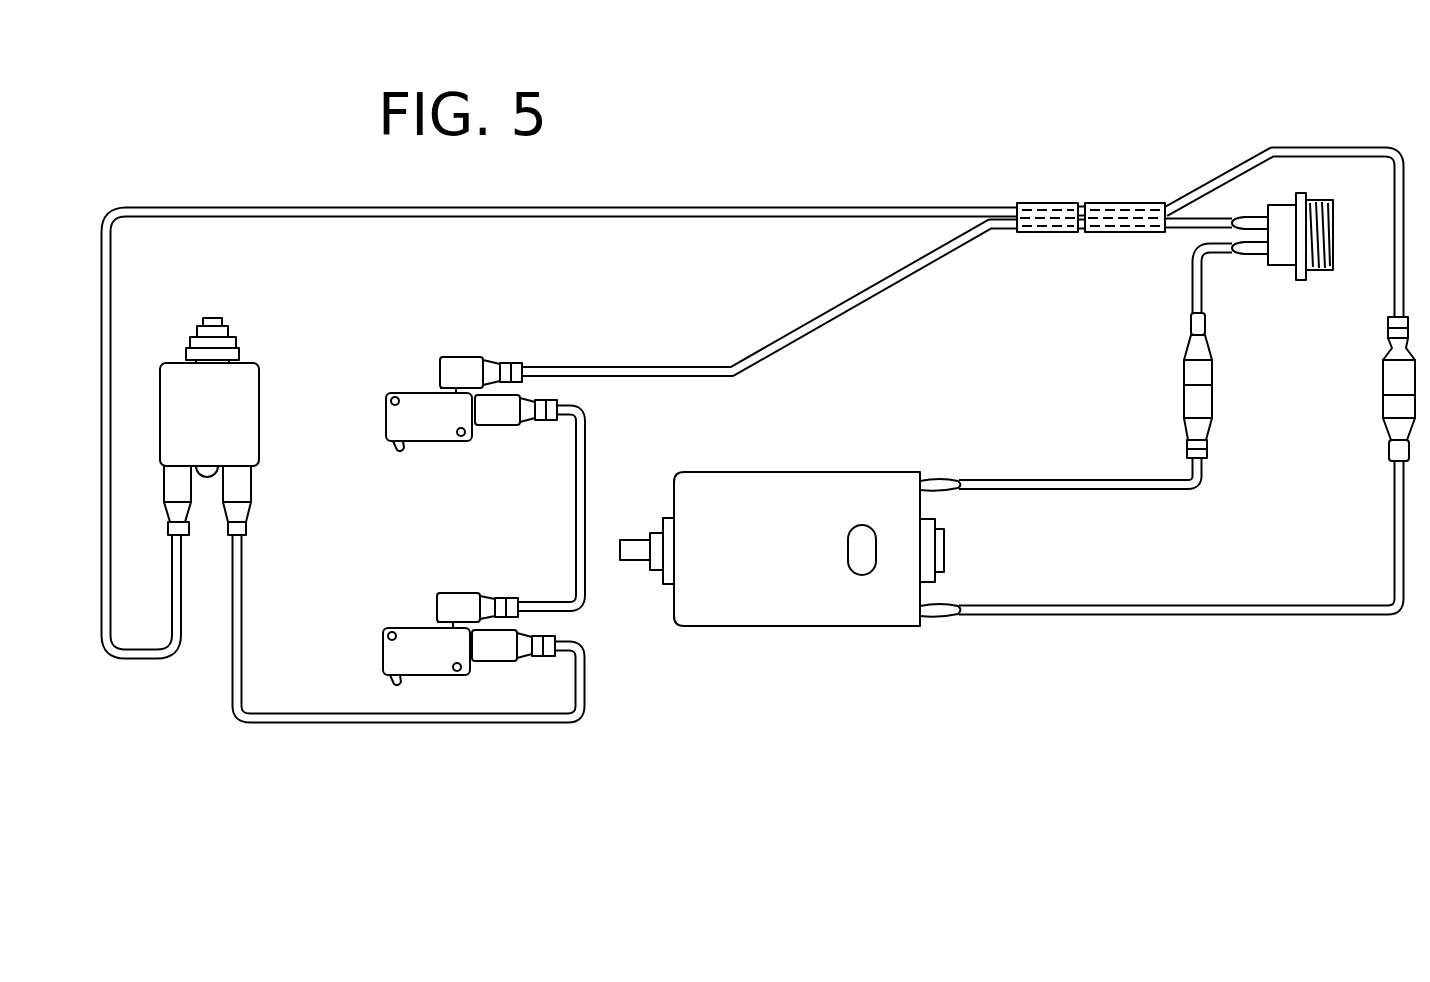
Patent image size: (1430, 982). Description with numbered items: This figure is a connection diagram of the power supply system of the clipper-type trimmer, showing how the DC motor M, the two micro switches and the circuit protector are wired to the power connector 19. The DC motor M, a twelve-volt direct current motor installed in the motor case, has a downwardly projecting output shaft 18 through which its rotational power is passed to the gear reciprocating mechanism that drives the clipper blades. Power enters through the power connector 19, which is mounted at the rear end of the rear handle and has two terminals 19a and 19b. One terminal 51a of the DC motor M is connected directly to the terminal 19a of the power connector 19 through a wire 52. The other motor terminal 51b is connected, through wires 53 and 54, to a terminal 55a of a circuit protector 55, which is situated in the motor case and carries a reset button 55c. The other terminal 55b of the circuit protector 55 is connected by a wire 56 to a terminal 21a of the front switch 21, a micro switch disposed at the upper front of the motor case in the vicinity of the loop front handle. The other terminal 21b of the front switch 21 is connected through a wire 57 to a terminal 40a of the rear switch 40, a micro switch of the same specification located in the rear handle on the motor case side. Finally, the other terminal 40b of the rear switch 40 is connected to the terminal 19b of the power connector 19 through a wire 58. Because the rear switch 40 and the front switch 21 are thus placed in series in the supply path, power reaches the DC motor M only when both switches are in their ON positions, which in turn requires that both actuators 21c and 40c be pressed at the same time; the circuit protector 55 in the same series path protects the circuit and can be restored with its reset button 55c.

The wire 54 is at (795, 213).
The wire 58 is at (846, 310).
The wire 57 is at (590, 428).
The wire 56 is at (343, 724).
The wire 52 is at (1200, 483).
The wire 53 is at (1147, 605).
The circuit protector 55 is at (248, 402).
The terminal of circuit protector 55a is at (185, 478).
The terminal of circuit protector 55b is at (243, 480).
The reset button 55c is at (213, 322).
The rear switch 40 is at (416, 400).
The terminal of rear switch 40a is at (500, 422).
The terminal of rear switch 40b is at (463, 373).
The actuator 40c is at (400, 445).
The front switch 21 is at (437, 662).
The terminal of front switch 21a is at (497, 632).
The terminal of front switch 21b is at (455, 605).
The actuator 21c is at (395, 680).
The DC motor M is at (787, 600).
The output shaft 18 is at (632, 545).
The terminal of DC motor 51a is at (955, 484).
The terminal of DC motor 51b is at (950, 615).
The power connector 19 is at (1287, 262).
The terminal of power connector 19a is at (1250, 256).
The terminal of power connector 19b is at (1243, 216).